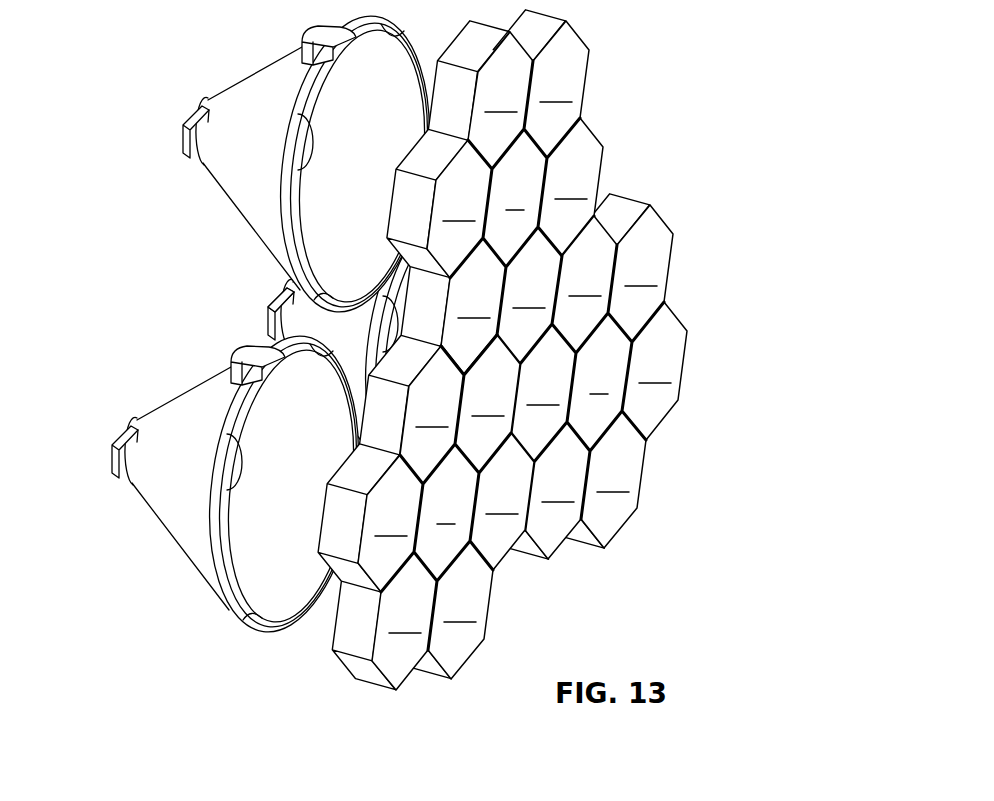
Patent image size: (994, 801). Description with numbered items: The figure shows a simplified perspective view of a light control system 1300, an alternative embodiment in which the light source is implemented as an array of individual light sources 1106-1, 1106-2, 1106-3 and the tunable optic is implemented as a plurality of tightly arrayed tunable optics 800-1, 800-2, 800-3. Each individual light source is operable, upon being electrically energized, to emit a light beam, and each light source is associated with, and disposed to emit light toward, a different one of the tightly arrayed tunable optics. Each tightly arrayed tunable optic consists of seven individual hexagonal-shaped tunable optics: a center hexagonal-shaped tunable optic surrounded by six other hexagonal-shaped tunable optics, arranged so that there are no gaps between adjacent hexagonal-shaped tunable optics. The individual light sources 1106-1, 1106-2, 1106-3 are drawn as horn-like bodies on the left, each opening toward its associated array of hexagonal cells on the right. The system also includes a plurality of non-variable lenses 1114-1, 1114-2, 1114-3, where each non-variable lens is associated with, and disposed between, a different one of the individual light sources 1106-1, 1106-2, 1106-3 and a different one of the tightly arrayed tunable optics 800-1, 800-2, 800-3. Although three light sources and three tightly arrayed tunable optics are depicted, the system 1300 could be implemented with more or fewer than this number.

The system 1300 is at (446, 356).
The tightly arrayed tunable optic 800-1 is at (600, 113).
The tightly arrayed tunable optic 800-2 is at (714, 365).
The tightly arrayed tunable optic 800-3 is at (323, 667).
The individual light source 1106-1 is at (291, 163).
The individual light source 1106-2 is at (221, 481).
The individual light source 1106-3 is at (324, 345).
The non-variable lens 1114-1 is at (262, 69).
The non-variable lens 1114-2 is at (197, 386).
The non-variable lens 1114-3 is at (283, 294).